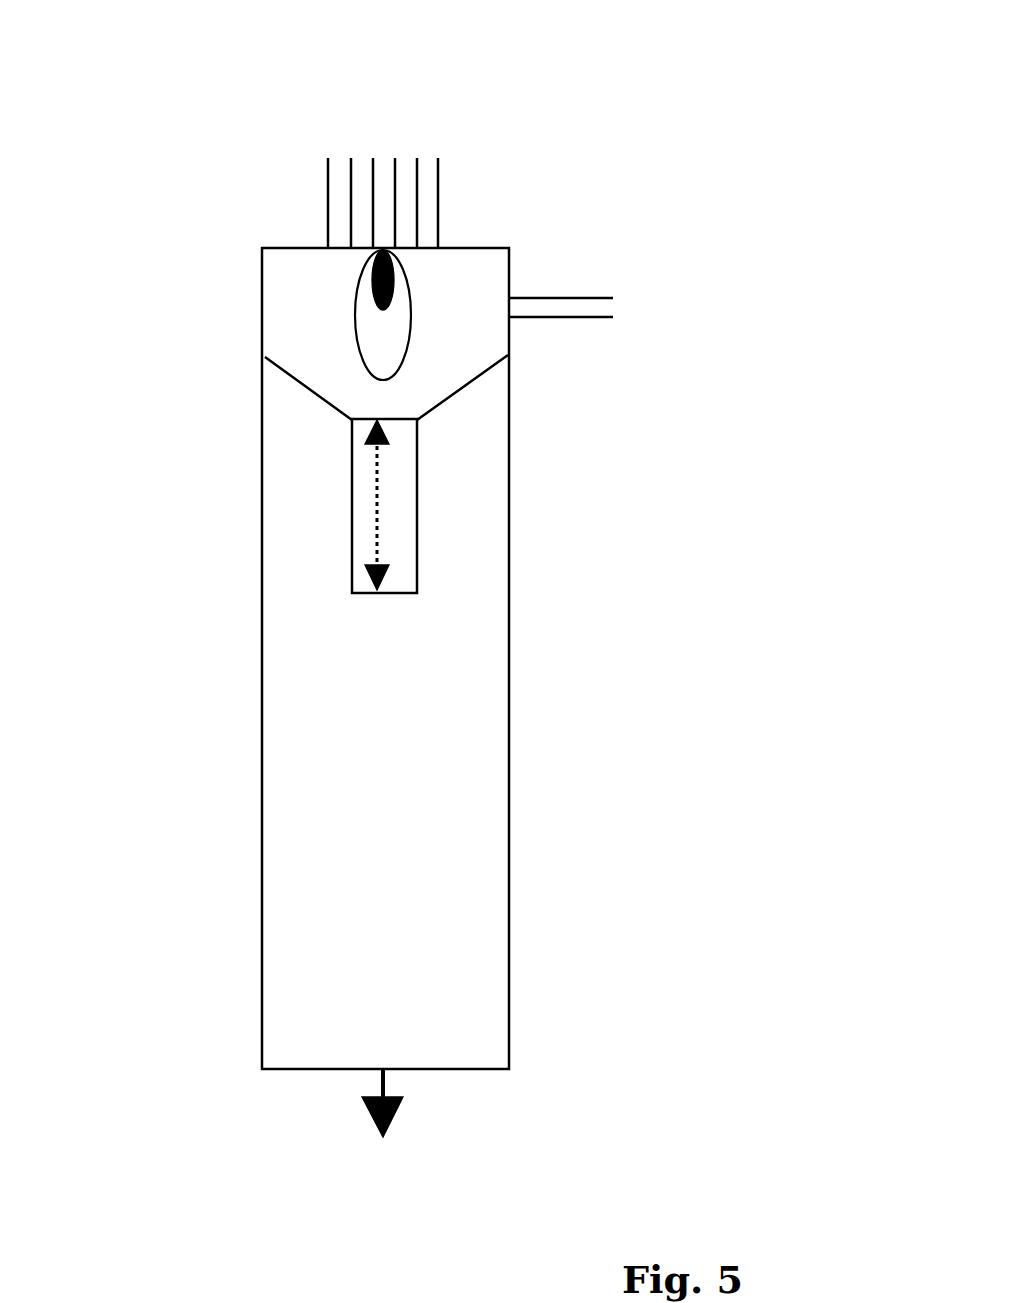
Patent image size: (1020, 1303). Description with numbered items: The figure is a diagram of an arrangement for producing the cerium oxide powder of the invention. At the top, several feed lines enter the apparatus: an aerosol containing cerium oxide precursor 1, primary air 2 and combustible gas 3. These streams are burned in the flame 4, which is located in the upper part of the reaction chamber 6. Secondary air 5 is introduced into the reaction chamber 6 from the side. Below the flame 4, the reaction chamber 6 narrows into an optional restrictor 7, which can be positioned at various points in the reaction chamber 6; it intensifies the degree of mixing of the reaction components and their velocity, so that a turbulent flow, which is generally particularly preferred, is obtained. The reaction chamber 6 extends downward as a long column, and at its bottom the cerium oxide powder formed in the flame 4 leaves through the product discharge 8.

The aerosol containing cerium oxide precursor 1 is at (438, 131).
The primary air 2 is at (403, 170).
The combustible gas 3 is at (425, 180).
The flame 4 is at (356, 300).
The secondary air 5 is at (600, 306).
The reaction chamber 6 is at (458, 432).
The restrictor 7 is at (412, 527).
The product discharge 8 is at (382, 1135).